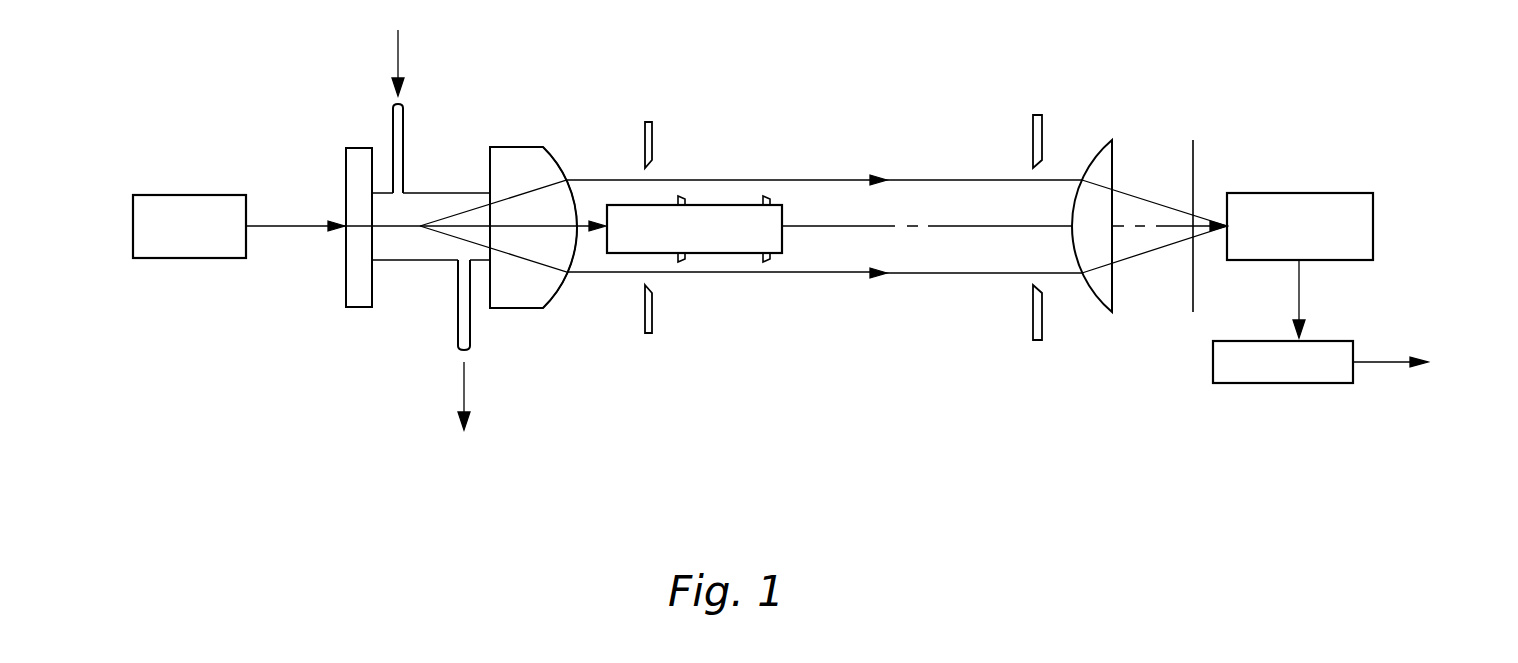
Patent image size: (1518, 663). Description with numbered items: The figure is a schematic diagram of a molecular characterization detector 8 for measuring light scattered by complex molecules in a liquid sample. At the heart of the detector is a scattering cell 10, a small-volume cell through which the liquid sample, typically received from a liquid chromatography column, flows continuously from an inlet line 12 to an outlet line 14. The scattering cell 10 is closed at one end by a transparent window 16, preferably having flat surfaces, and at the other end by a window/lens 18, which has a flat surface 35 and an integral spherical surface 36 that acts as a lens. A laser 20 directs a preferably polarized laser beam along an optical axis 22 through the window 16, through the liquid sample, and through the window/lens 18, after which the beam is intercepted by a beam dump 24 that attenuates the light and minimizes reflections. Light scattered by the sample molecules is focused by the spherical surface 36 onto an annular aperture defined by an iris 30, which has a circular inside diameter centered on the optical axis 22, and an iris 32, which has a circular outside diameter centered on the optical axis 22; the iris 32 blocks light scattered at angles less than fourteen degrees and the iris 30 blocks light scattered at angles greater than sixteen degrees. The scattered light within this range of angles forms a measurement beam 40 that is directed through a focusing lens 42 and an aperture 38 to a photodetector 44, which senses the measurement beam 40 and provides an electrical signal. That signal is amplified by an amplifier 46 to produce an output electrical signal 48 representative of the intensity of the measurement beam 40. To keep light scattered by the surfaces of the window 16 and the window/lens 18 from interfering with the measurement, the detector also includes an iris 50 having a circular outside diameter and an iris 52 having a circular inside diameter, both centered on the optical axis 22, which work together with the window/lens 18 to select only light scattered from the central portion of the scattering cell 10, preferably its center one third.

The molecular characterization detector 8 is at (866, 96).
The scattering cell 10 is at (432, 272).
The inlet line 12 is at (405, 118).
The outlet line 14 is at (456, 338).
The transparent window 16 is at (346, 148).
The window/lens 18 is at (543, 138).
The laser 20 is at (243, 195).
The optical axis 22 is at (281, 222).
The beam dump 24 is at (642, 253).
The iris 30 is at (652, 138).
The iris 32 is at (683, 198).
The flat surface 35 is at (490, 163).
The spherical surface 36 is at (566, 172).
The aperture 38 is at (1192, 299).
The measurement beam 40 is at (963, 180).
The focusing lens 42 is at (1113, 168).
The photodetector 44 is at (1335, 193).
The amplifier 46 is at (1268, 341).
The output signal 48 is at (1393, 355).
The iris 50 is at (768, 198).
The iris 52 is at (1042, 140).